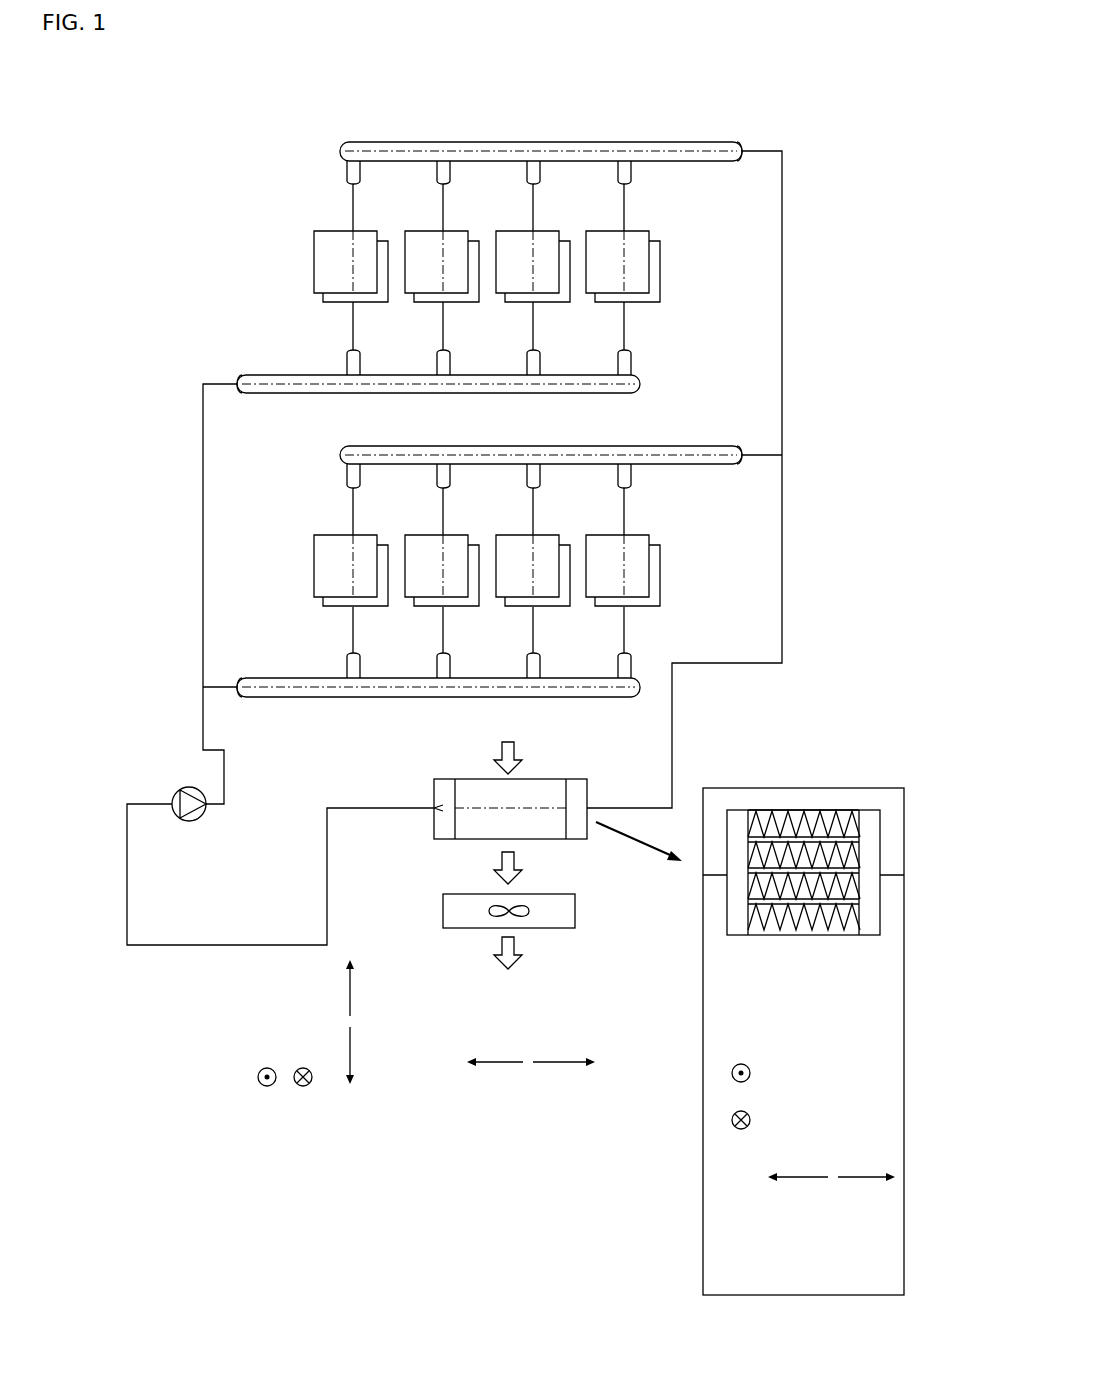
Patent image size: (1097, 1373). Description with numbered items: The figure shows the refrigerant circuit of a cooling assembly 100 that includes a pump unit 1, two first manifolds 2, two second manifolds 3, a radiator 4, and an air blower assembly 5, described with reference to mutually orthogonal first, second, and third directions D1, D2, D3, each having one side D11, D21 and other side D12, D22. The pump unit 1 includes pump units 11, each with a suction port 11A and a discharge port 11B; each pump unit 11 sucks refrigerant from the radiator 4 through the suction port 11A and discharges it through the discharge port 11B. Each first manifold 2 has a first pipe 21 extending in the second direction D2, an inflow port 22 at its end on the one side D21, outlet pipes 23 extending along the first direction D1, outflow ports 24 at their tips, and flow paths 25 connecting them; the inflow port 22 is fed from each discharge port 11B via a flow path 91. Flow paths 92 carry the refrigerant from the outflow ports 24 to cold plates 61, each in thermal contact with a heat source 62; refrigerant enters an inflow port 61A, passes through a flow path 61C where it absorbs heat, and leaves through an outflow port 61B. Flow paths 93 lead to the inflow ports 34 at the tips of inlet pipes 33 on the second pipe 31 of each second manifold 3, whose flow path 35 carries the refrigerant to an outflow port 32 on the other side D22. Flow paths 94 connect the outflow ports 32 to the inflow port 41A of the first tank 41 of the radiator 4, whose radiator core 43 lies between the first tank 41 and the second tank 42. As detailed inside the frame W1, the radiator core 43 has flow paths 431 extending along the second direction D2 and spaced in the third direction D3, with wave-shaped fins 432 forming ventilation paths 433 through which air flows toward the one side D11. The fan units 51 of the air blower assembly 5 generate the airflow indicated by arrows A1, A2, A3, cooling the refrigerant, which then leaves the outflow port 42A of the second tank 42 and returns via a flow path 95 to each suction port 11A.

The cooling assembly 100 is at (822, 176).
The pump unit 1 is at (168, 778).
The pump unit 11 is at (188, 825).
The suction port 11A is at (173, 818).
The discharge port 11B is at (208, 818).
The first manifold 2 is at (262, 400).
The first pipe 21 is at (272, 400).
The inflow port 22 is at (233, 378).
The outlet pipe 23 is at (380, 394).
The outflow port 24 is at (361, 352).
The flow path 25 is at (390, 385).
The second manifold 3 is at (745, 112).
The second pipe 31 is at (675, 142).
The outflow port 32 is at (746, 164).
The inlet pipe 33 is at (438, 163).
The inflow port 34 is at (361, 186).
The flow path 35 is at (592, 142).
The radiator 4 is at (553, 775).
The first tank 41 is at (576, 840).
The inflow port 41A is at (592, 802).
The second tank 42 is at (434, 824).
The outflow port 42A is at (430, 802).
The radiator core 43 is at (560, 840).
The flow path 431 is at (860, 870).
The fin 432 is at (800, 850).
The ventilation path 433 is at (768, 820).
The air blower assembly 5 is at (575, 937).
The fan unit 51 is at (442, 911).
The cold plate 61 is at (406, 434).
The inflow port 61A is at (346, 590).
The outflow port 61B is at (345, 530).
The flow path 61C is at (348, 560).
The heat source 62 is at (415, 300).
The flow path 91 is at (203, 702).
The flow path 92 is at (352, 330).
The flow path 93 is at (621, 530).
The flow path 94 is at (784, 515).
The flow path 95 is at (290, 946).
The frame W1 is at (718, 790).
The arrow A1 is at (500, 778).
The arrow A2 is at (500, 868).
The arrow A3 is at (518, 968).
The first direction D1 is at (808, 1055).
The one side in the first direction D11 is at (352, 1047).
The other side in the first direction D12 is at (352, 992).
The second direction D2 is at (891, 1242).
The one side in the second direction D21 is at (800, 1180).
The other side in the second direction D22 is at (860, 1180).
The third direction D3 is at (320, 1087).